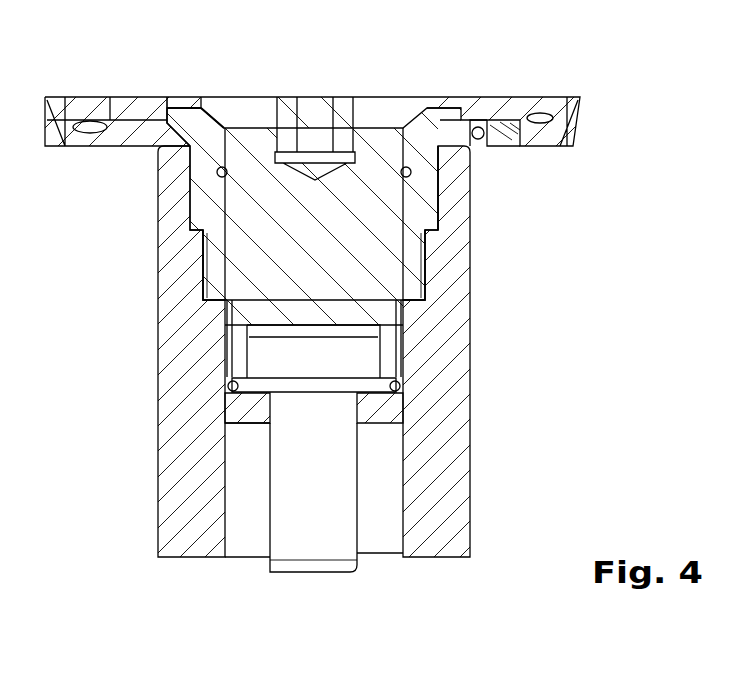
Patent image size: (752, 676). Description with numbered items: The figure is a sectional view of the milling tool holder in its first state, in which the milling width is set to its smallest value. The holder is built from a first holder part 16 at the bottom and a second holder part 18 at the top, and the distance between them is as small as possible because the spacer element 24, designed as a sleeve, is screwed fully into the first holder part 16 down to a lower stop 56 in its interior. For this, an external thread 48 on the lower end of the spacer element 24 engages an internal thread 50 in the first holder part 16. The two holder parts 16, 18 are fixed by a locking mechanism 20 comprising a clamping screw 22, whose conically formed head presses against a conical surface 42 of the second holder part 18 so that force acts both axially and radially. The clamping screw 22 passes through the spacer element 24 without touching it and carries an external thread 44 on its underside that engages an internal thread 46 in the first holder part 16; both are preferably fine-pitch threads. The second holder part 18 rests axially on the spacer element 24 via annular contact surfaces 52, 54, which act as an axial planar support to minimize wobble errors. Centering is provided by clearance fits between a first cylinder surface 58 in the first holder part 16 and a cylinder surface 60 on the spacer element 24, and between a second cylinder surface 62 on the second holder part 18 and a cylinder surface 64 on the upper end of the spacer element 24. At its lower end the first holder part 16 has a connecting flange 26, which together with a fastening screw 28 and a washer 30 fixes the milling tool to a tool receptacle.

The first holder part 16 is at (457, 355).
The second holder part 18 is at (503, 118).
The locking mechanism 20 is at (314, 174).
The clamping screw 22 is at (380, 127).
The spacer element 24 is at (428, 201).
The connecting flange 26 is at (232, 528).
The fastening screw 28 is at (337, 493).
The washer 30 is at (253, 410).
The conical surface 42 is at (212, 97).
The external thread 44 is at (227, 338).
The internal thread 46 is at (225, 346).
The external thread 48 is at (139, 265).
The internal thread 50 is at (200, 271).
The annular contact surface 52 is at (163, 85).
The annular contact surface 54 is at (173, 97).
The lower stop 56 is at (423, 243).
The first cylinder surface 58 is at (232, 187).
The cylinder surface 60 is at (190, 183).
The second cylinder surface 62 is at (523, 153).
The cylinder surface 64 is at (475, 122).